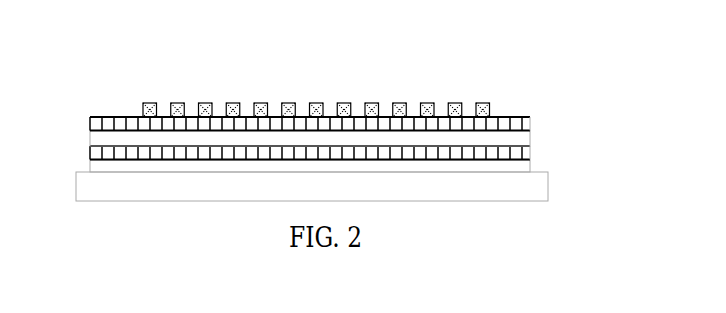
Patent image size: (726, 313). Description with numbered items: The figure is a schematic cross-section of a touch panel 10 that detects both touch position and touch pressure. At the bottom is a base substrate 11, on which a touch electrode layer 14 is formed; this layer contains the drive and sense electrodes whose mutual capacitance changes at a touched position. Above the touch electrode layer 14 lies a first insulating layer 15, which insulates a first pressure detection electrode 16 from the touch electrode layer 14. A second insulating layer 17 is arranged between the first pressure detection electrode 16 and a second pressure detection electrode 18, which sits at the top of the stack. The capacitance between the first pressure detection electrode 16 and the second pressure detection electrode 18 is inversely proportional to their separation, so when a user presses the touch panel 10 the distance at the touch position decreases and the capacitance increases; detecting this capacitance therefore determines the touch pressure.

The touch panel 10 is at (121, 44).
The base substrate 11 is at (534, 185).
The touch electrode layer 14 is at (108, 164).
The first insulating layer 15 is at (530, 154).
The first pressure detection electrode 16 is at (132, 137).
The second insulating layer 17 is at (530, 123).
The second pressure detection electrode 18 is at (142, 108).